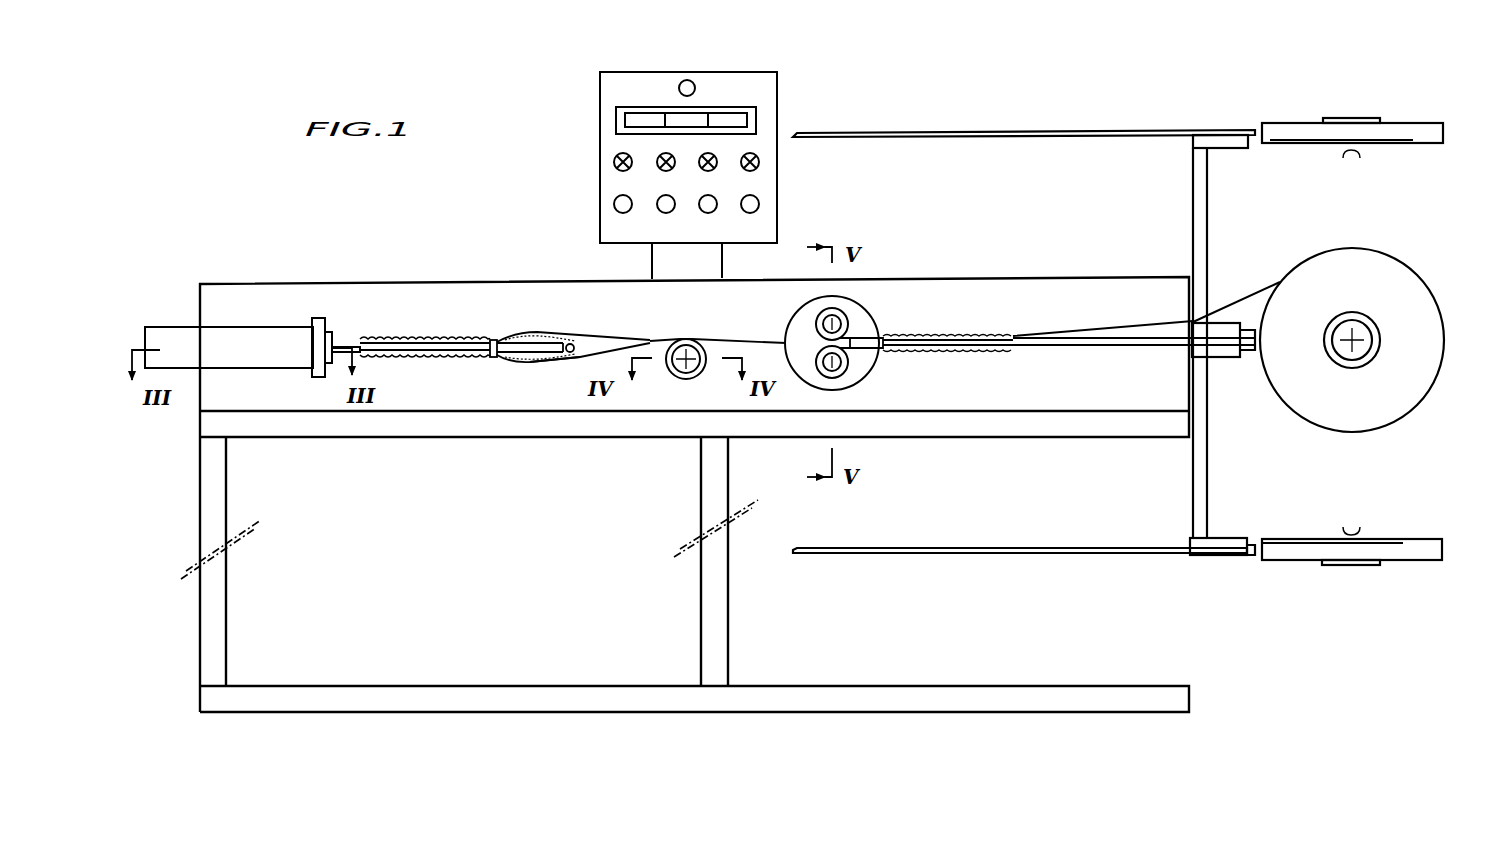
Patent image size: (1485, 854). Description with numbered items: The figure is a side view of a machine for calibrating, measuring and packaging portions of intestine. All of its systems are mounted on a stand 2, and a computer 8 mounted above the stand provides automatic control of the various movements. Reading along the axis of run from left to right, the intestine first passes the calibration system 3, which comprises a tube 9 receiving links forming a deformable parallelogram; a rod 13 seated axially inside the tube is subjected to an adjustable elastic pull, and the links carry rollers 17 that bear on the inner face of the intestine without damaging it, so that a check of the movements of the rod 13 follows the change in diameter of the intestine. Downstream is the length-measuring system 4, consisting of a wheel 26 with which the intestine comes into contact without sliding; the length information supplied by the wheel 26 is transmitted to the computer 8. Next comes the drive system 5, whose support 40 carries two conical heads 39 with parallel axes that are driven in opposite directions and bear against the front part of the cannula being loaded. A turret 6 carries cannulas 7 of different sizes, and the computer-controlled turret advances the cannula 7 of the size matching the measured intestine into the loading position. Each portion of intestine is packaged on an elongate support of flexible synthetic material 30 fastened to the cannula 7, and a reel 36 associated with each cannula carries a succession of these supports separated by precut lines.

The stand 2 is at (706, 623).
The calibration system 3 is at (477, 292).
The length-measuring system 4 is at (680, 383).
The drive system 5 is at (832, 379).
The turret 6 is at (1183, 243).
The cannula 7 is at (1013, 137).
The computer 8 is at (782, 68).
The tube 9 is at (398, 347).
The rod 13 is at (523, 343).
The rollers 17 is at (550, 363).
The wheel 26 is at (690, 340).
The elongate support of flexible synthetic material 30 is at (1260, 270).
The reel 36 is at (1423, 133).
The conical heads 39 is at (846, 312).
The support 40 is at (800, 322).